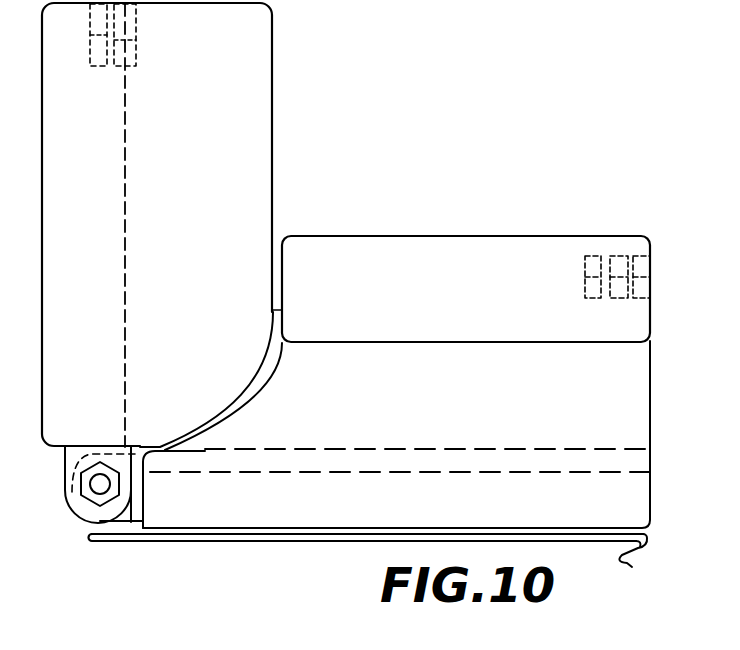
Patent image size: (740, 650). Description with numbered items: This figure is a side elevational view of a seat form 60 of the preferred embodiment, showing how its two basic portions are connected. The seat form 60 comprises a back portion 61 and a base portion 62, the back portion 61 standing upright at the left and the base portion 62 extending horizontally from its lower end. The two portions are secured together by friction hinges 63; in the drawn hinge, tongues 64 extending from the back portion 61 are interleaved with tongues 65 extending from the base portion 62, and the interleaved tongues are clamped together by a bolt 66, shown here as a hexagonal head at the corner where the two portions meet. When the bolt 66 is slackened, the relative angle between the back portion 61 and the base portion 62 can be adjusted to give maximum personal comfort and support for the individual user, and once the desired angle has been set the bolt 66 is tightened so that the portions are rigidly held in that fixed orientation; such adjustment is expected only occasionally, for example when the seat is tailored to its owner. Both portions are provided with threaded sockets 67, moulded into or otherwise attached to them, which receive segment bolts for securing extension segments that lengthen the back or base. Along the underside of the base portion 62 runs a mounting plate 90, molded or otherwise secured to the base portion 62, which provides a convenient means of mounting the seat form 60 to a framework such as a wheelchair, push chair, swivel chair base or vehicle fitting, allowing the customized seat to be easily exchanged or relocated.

The seat form 60 is at (390, 118).
The back portion 61 is at (262, 44).
The base portion 62 is at (355, 360).
The friction hinge 63 is at (78, 533).
The tongue 64 is at (67, 460).
The tongue 65 is at (128, 513).
The bolt 66 is at (80, 500).
The threaded socket 67 is at (650, 278).
The mounting plate 90 is at (632, 567).